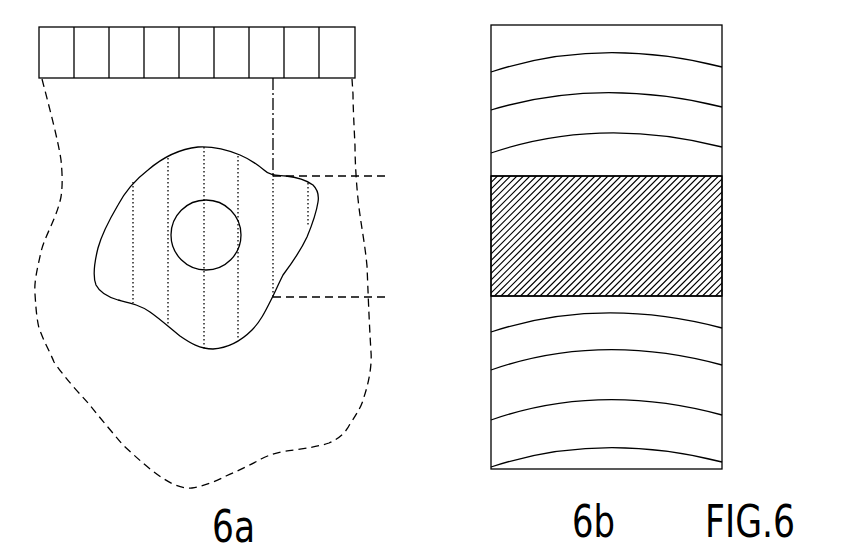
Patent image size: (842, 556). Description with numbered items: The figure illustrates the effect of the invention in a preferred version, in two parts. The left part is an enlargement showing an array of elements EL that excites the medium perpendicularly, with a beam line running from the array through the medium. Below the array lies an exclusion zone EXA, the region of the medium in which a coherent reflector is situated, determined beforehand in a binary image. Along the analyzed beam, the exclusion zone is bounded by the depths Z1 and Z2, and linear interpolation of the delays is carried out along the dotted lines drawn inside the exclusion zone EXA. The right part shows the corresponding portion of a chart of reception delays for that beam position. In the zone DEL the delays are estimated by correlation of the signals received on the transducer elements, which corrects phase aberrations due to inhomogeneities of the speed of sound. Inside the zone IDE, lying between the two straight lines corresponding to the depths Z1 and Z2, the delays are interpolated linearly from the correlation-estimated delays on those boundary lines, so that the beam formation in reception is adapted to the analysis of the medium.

The array of elements EL is at (347, 45).
The exclusion zone EXA is at (248, 333).
The first depth Z1 is at (350, 177).
The second depth Z2 is at (350, 298).
The zone of delays estimated by correlation DEL is at (708, 133).
The exclusion zone of the delay chart IDE is at (740, 210).